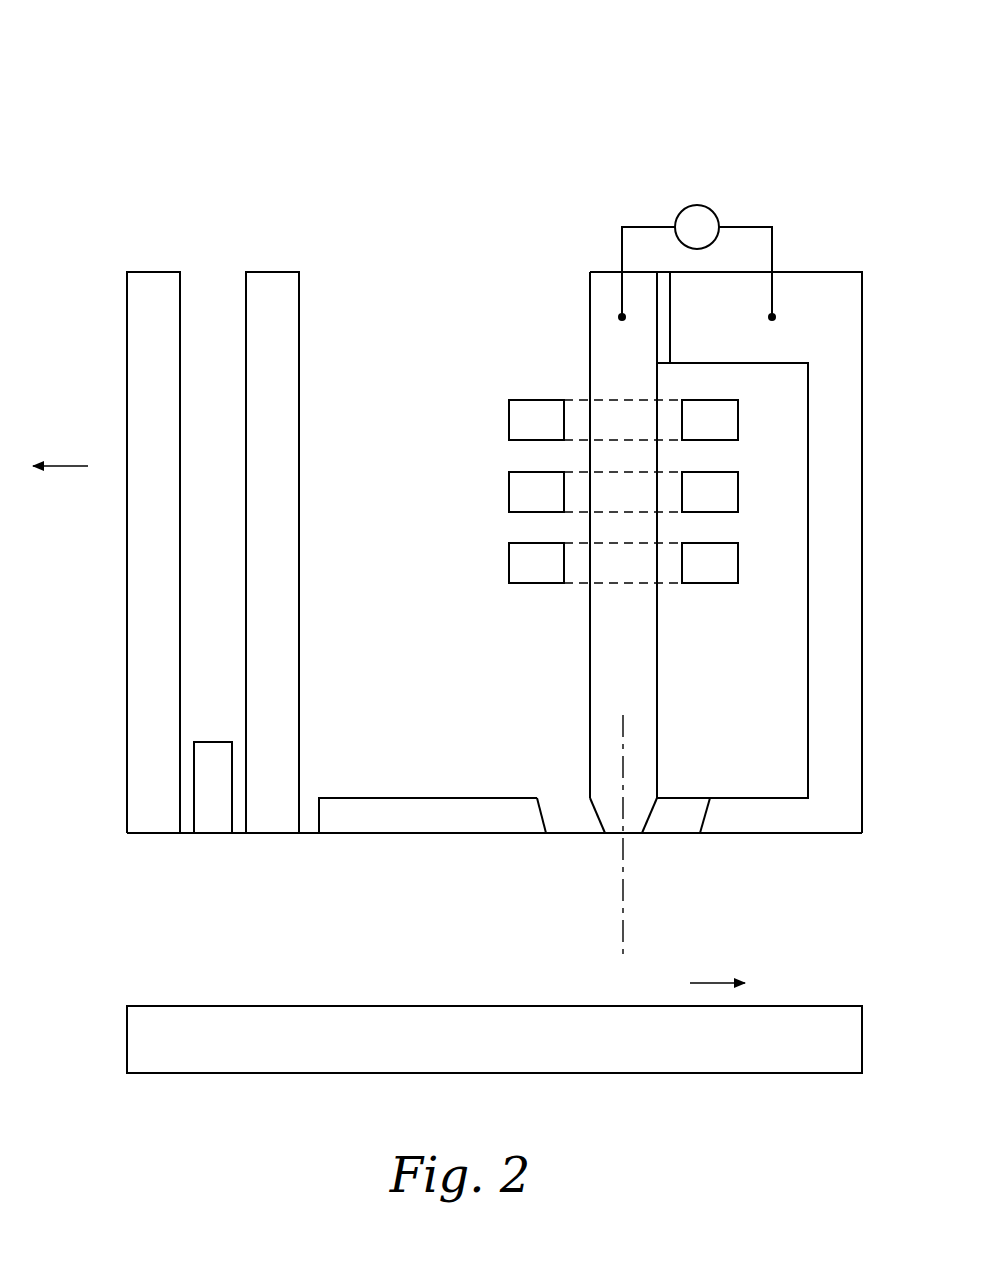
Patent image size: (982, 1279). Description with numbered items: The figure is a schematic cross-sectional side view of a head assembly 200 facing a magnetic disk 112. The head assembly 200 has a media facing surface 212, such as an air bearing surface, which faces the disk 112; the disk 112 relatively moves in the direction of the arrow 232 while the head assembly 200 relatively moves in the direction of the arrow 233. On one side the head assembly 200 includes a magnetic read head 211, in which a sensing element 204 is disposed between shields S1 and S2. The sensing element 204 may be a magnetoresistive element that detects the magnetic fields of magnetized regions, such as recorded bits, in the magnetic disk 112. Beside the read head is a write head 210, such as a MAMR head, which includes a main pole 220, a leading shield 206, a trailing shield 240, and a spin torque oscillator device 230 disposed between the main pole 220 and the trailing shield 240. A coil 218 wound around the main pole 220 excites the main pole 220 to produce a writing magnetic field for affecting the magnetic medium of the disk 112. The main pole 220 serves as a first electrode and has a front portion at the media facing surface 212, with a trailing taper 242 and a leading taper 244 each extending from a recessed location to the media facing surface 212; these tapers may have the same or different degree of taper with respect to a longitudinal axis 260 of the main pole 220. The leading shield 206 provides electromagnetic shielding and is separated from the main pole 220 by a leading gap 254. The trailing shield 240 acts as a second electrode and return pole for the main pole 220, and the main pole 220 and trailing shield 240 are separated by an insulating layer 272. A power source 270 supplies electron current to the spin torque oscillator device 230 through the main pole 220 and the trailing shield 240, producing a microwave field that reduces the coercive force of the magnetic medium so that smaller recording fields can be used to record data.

The head assembly 200 is at (124, 45).
The magnetic read head 211 is at (302, 143).
The write head 210 is at (867, 143).
The shield S1 is at (150, 835).
The shield S2 is at (274, 835).
The sensing element 204 is at (213, 835).
The leading shield 206 is at (374, 835).
The leading gap 254 is at (574, 818).
The spin torque oscillator device 230 is at (673, 818).
The main pole 220 is at (652, 633).
The insulating layer 272 is at (672, 318).
The media facing surface 212 is at (747, 835).
The trailing shield 240 is at (834, 818).
The coil 218 is at (537, 583).
The leading taper 244 is at (590, 787).
The trailing taper 242 is at (657, 790).
The longitudinal axis 260 is at (623, 937).
The power source 270 is at (697, 205).
The arrow 232 is at (708, 983).
The arrow 233 is at (69, 466).
The magnetic disk 112 is at (127, 1035).